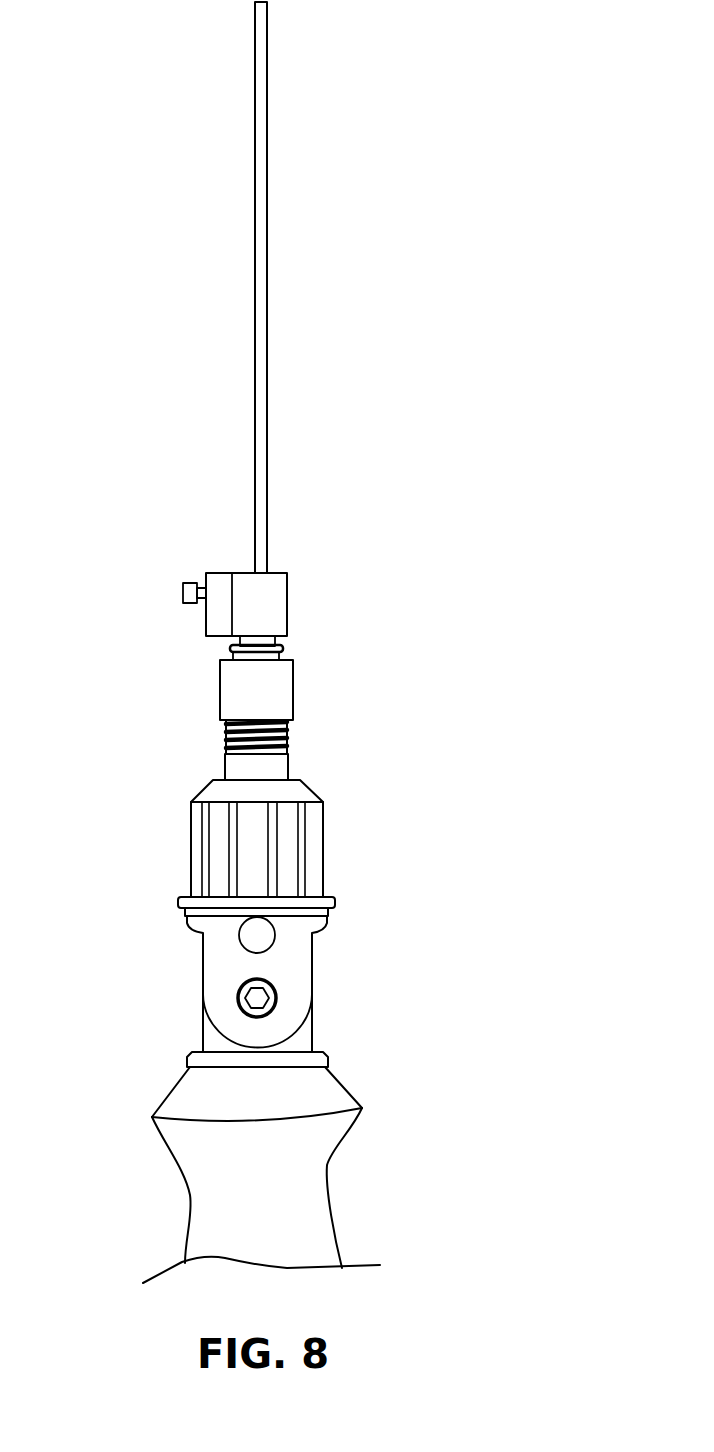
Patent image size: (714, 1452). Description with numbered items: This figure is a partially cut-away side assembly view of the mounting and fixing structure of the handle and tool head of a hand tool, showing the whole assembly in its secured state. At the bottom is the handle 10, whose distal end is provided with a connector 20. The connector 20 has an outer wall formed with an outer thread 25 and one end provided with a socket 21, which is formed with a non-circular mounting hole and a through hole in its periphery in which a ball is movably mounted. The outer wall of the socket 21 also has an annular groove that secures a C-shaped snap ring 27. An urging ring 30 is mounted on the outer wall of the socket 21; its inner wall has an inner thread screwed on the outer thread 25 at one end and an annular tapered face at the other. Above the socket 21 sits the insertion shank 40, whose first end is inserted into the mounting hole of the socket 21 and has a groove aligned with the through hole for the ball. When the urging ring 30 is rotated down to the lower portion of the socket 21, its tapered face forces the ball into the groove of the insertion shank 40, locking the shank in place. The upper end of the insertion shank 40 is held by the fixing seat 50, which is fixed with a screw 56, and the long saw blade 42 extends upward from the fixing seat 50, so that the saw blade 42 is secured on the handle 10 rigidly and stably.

The handle 10 is at (218, 1172).
The connector 20 is at (247, 765).
The socket 21 is at (275, 655).
The outer thread 25 is at (285, 740).
The C-shaped snap ring 27 is at (235, 648).
The urging ring 30 is at (245, 687).
The insertion shank 40 is at (276, 638).
The saw blade 42 is at (263, 477).
The fixing seat 50 is at (270, 607).
The screw 56 is at (187, 593).